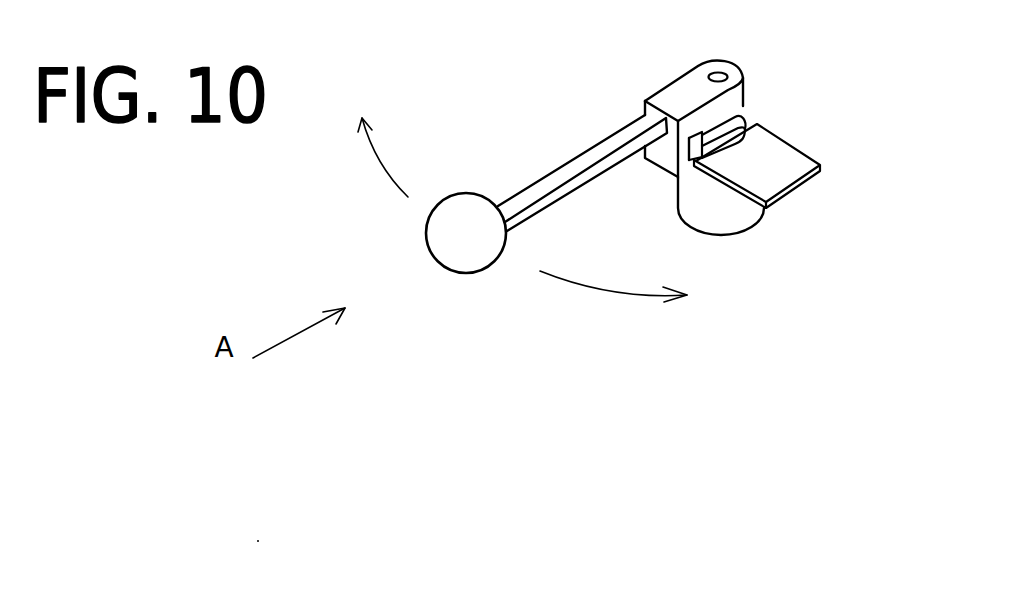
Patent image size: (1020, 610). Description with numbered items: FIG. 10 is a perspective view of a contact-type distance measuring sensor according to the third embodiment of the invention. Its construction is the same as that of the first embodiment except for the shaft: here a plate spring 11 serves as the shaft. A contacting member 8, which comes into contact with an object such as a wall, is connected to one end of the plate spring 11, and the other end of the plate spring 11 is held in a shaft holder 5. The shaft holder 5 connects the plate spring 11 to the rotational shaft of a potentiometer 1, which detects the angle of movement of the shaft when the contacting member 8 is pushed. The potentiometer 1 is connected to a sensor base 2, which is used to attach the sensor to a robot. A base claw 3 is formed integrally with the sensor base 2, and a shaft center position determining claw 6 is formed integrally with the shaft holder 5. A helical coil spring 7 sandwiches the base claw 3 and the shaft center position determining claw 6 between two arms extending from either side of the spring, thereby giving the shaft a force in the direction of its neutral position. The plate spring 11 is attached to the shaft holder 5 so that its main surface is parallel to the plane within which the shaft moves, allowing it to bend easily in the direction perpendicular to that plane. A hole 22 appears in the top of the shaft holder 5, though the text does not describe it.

The potentiometer 1 is at (740, 214).
The sensor base 2 is at (790, 162).
The base claw 3 is at (696, 176).
The shaft holder 5 is at (676, 86).
The shaft center position determining claw 6 is at (655, 162).
The helical coil spring 7 is at (742, 111).
The contacting member 8 is at (450, 265).
The plate spring 11 is at (578, 163).
The hole 22 is at (719, 72).